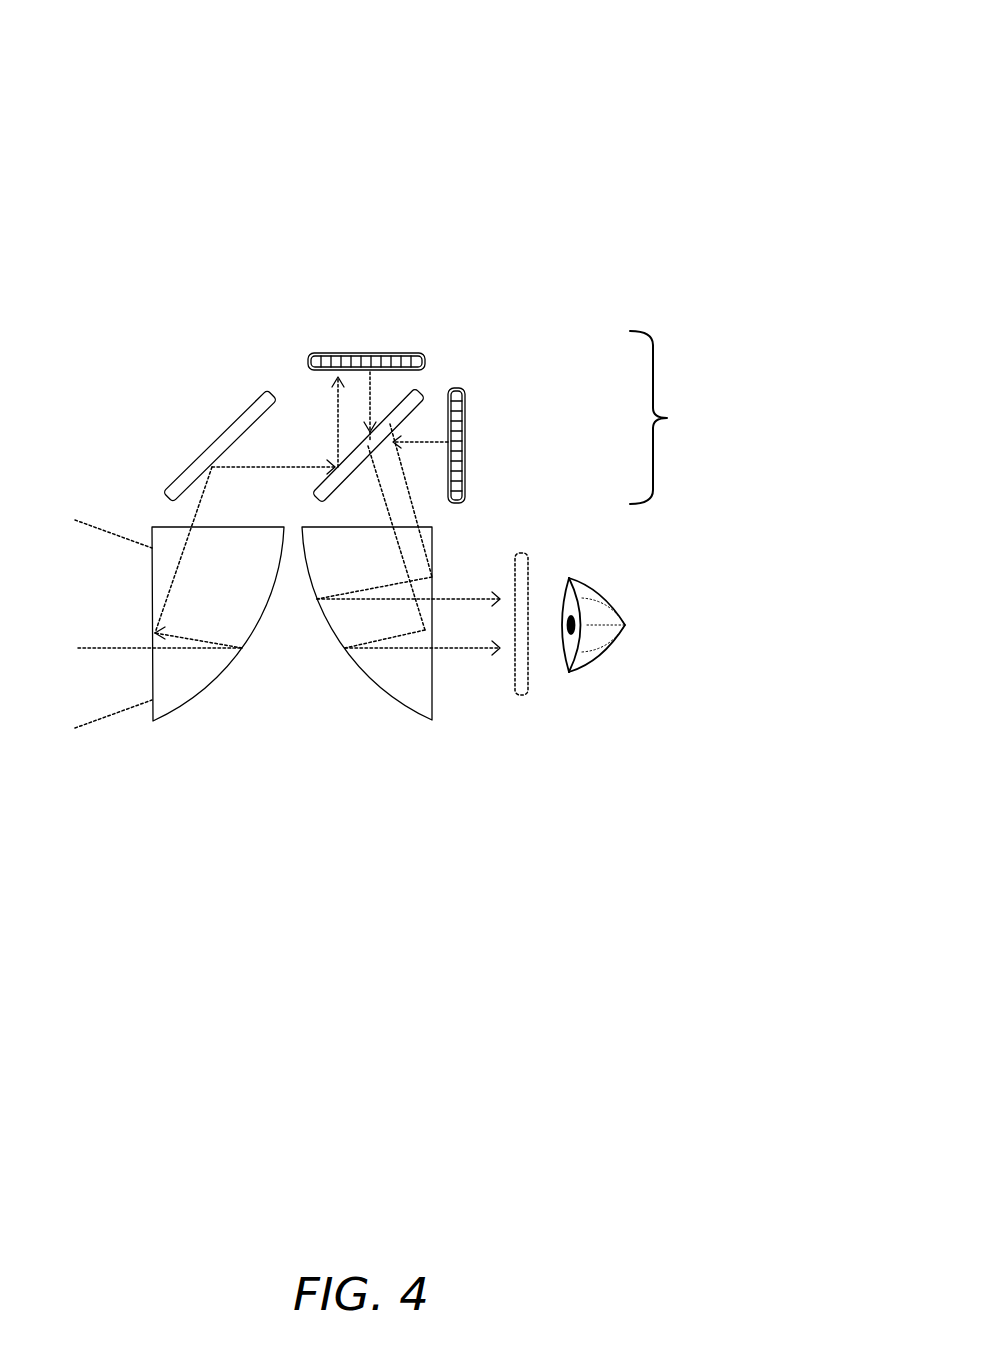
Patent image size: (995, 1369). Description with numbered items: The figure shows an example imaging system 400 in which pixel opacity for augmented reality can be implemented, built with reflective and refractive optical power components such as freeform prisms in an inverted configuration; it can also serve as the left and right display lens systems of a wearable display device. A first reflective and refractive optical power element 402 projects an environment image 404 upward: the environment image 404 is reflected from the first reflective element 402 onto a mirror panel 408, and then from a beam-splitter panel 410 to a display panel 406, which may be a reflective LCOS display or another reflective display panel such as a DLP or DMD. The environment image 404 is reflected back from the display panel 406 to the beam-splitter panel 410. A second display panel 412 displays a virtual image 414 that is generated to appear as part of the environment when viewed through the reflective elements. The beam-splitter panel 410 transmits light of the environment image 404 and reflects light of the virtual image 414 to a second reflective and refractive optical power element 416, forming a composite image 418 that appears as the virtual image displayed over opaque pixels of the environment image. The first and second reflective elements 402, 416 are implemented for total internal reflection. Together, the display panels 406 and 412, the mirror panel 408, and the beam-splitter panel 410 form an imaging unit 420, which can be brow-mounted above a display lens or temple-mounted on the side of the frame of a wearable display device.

The imaging system 400 is at (646, 72).
The first reflective and refractive optical power element 402 is at (178, 710).
The environment image 404 is at (330, 373).
The display panel 406 is at (348, 355).
The mirror panel 408 is at (238, 413).
The beam-splitter panel 410 is at (418, 392).
The display panel 412 is at (468, 417).
The virtual image 414 is at (442, 470).
The second reflective and refractive optical power element 416 is at (400, 707).
The composite image 418 is at (569, 536).
The imaging unit 420 is at (678, 417).